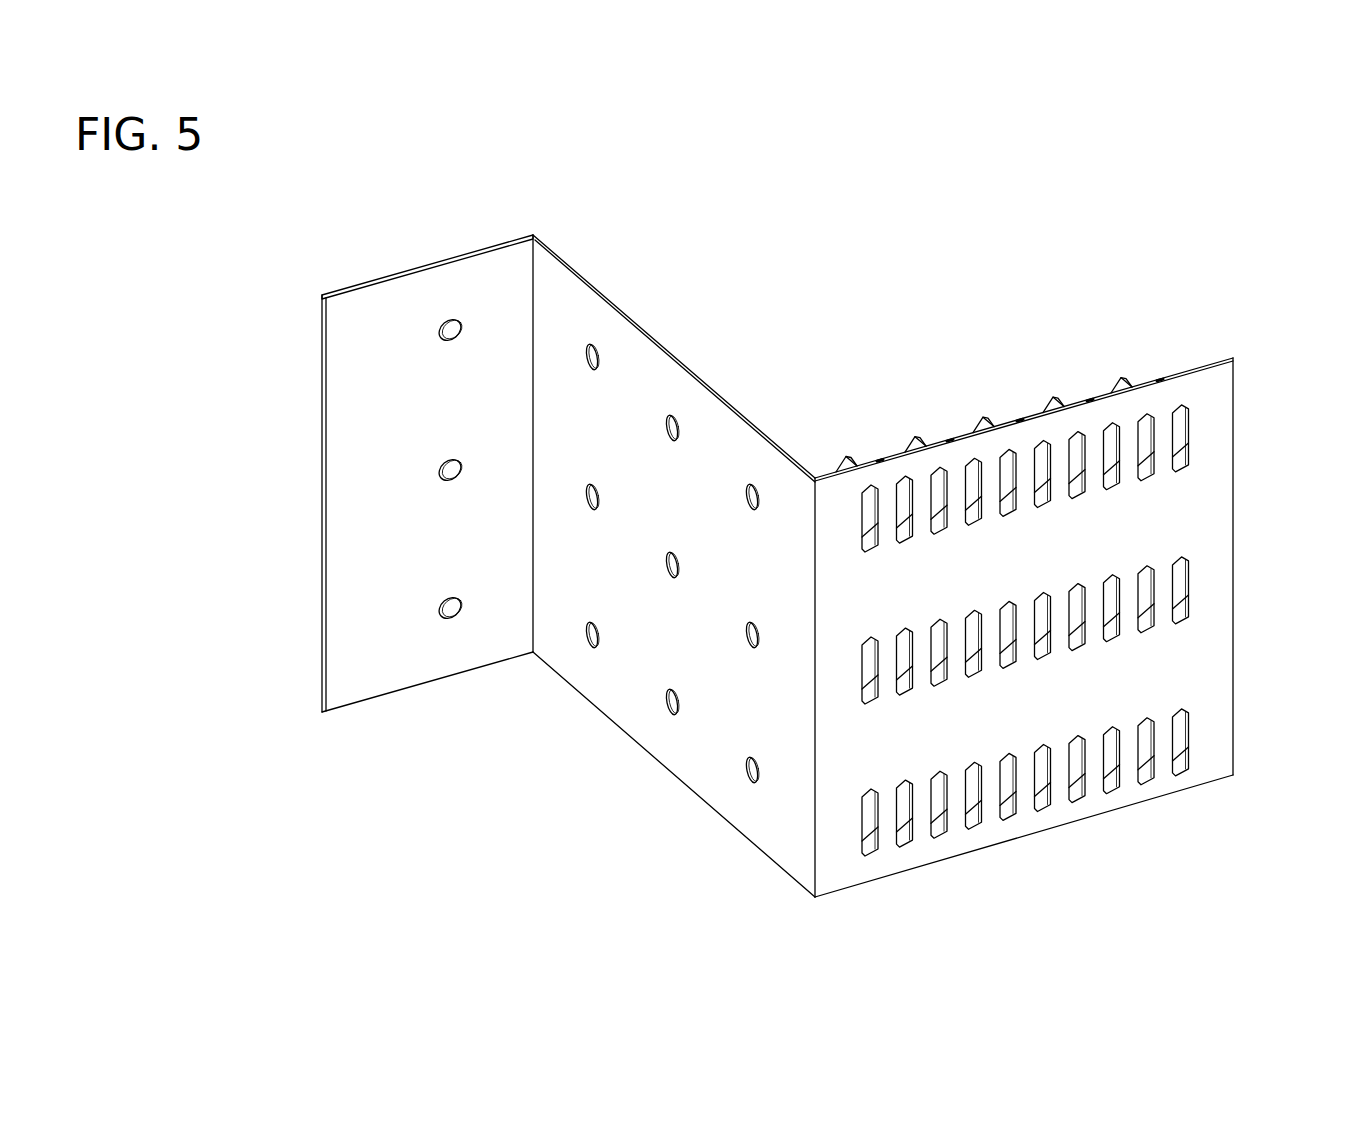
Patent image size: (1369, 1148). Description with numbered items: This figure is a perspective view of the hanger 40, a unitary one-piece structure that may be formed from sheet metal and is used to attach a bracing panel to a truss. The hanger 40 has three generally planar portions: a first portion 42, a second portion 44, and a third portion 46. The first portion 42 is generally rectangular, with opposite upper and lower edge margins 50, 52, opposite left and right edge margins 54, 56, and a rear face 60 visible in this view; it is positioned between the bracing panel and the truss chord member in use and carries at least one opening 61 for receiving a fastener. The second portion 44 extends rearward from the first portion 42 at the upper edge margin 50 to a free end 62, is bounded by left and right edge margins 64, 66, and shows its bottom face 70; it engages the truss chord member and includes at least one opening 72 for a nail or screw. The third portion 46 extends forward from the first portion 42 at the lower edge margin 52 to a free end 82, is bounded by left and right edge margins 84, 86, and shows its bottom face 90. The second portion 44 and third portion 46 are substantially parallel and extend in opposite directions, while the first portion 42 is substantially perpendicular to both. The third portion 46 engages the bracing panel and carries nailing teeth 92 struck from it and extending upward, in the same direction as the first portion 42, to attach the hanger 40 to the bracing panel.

The hanger 40 is at (1143, 310).
The first portion 42 is at (617, 301).
The second portion 44 is at (340, 290).
The third portion 46 is at (1031, 413).
The upper edge margin 50 is at (530, 278).
The lower edge margin 52 is at (812, 528).
The left edge margin 54 is at (696, 374).
The right edge margin 56 is at (650, 756).
The rear face 60 is at (600, 577).
The opening 61 is at (682, 428).
The free end 62 is at (322, 382).
The left edge margin 64 is at (392, 278).
The right edge margin 66 is at (414, 690).
The bottom face 70 is at (375, 447).
The opening 72 is at (458, 322).
The free end 82 is at (1235, 527).
The left edge margin 84 is at (967, 435).
The right edge margin 86 is at (1078, 822).
The bottom face 90 is at (1024, 718).
The nailing teeth 92 is at (917, 448).